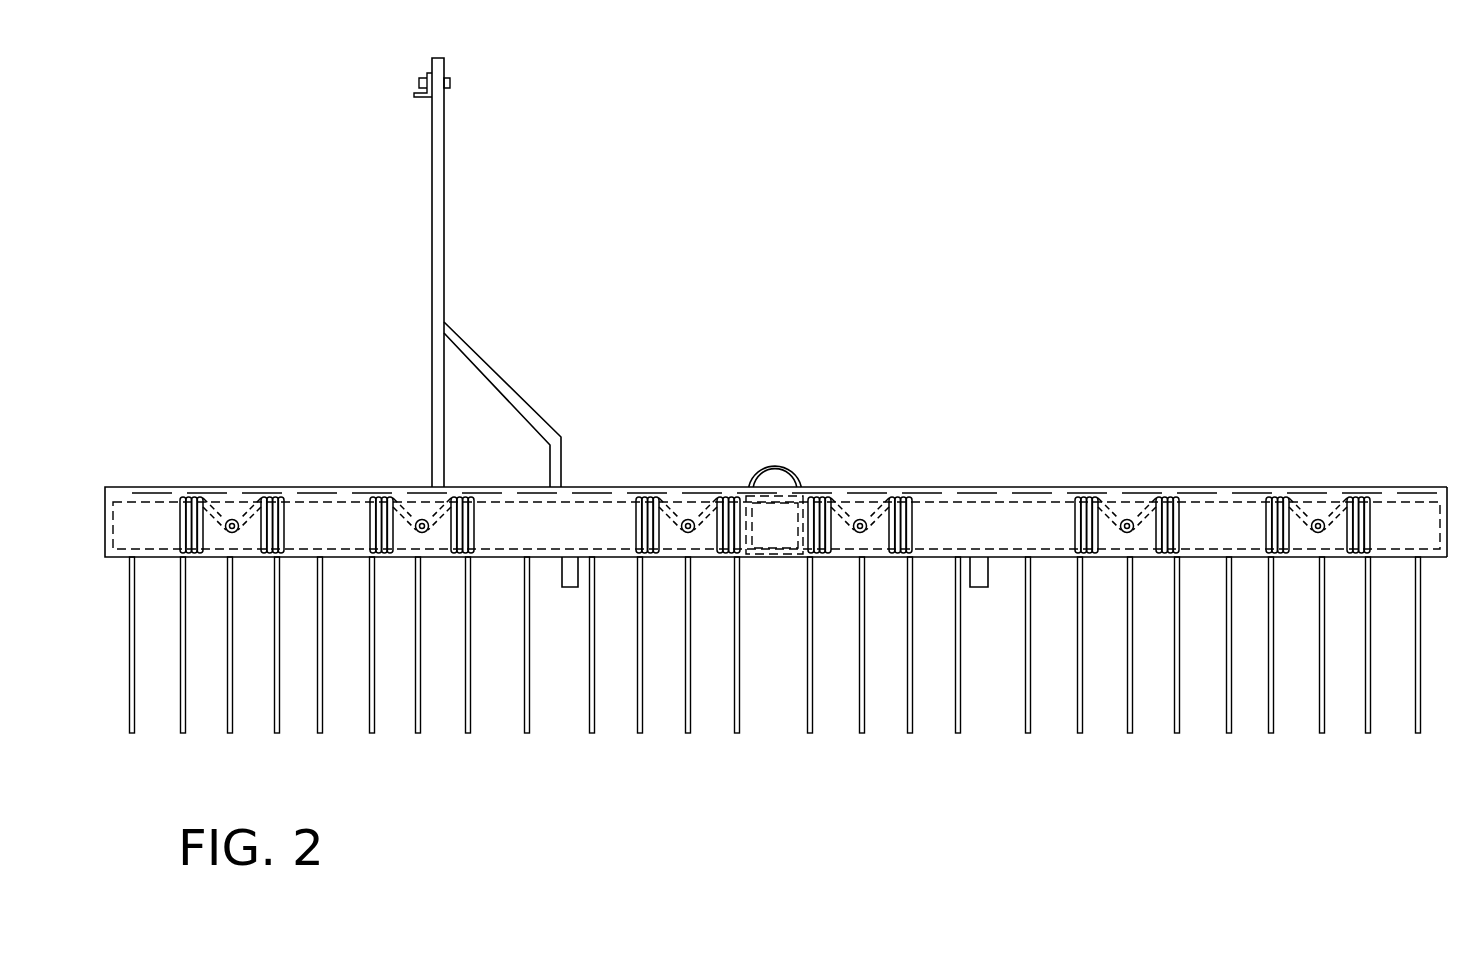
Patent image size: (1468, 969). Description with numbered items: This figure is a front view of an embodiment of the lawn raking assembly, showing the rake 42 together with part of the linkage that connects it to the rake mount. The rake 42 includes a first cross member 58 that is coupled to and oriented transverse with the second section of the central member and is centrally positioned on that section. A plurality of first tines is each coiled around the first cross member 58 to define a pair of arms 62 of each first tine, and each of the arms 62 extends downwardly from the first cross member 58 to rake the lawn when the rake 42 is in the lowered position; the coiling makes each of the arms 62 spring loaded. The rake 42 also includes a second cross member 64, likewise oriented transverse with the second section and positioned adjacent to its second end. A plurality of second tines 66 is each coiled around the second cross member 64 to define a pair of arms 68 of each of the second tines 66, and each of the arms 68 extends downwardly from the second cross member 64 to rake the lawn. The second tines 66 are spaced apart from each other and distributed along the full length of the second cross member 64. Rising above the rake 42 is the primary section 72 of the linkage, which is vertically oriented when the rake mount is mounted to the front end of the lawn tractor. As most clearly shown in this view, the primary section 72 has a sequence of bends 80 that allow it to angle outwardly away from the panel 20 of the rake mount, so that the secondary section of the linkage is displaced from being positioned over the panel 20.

The panel 20 is at (466, 177).
The primary section 72 is at (444, 228).
The bends 80 is at (432, 325).
The rake 42 is at (1005, 469).
The first cross member 58 is at (1257, 502).
The second cross member 64 is at (1443, 487).
The second tines 66 is at (1172, 510).
The arms 68 is at (1083, 711).
The arms 62 is at (1324, 705).